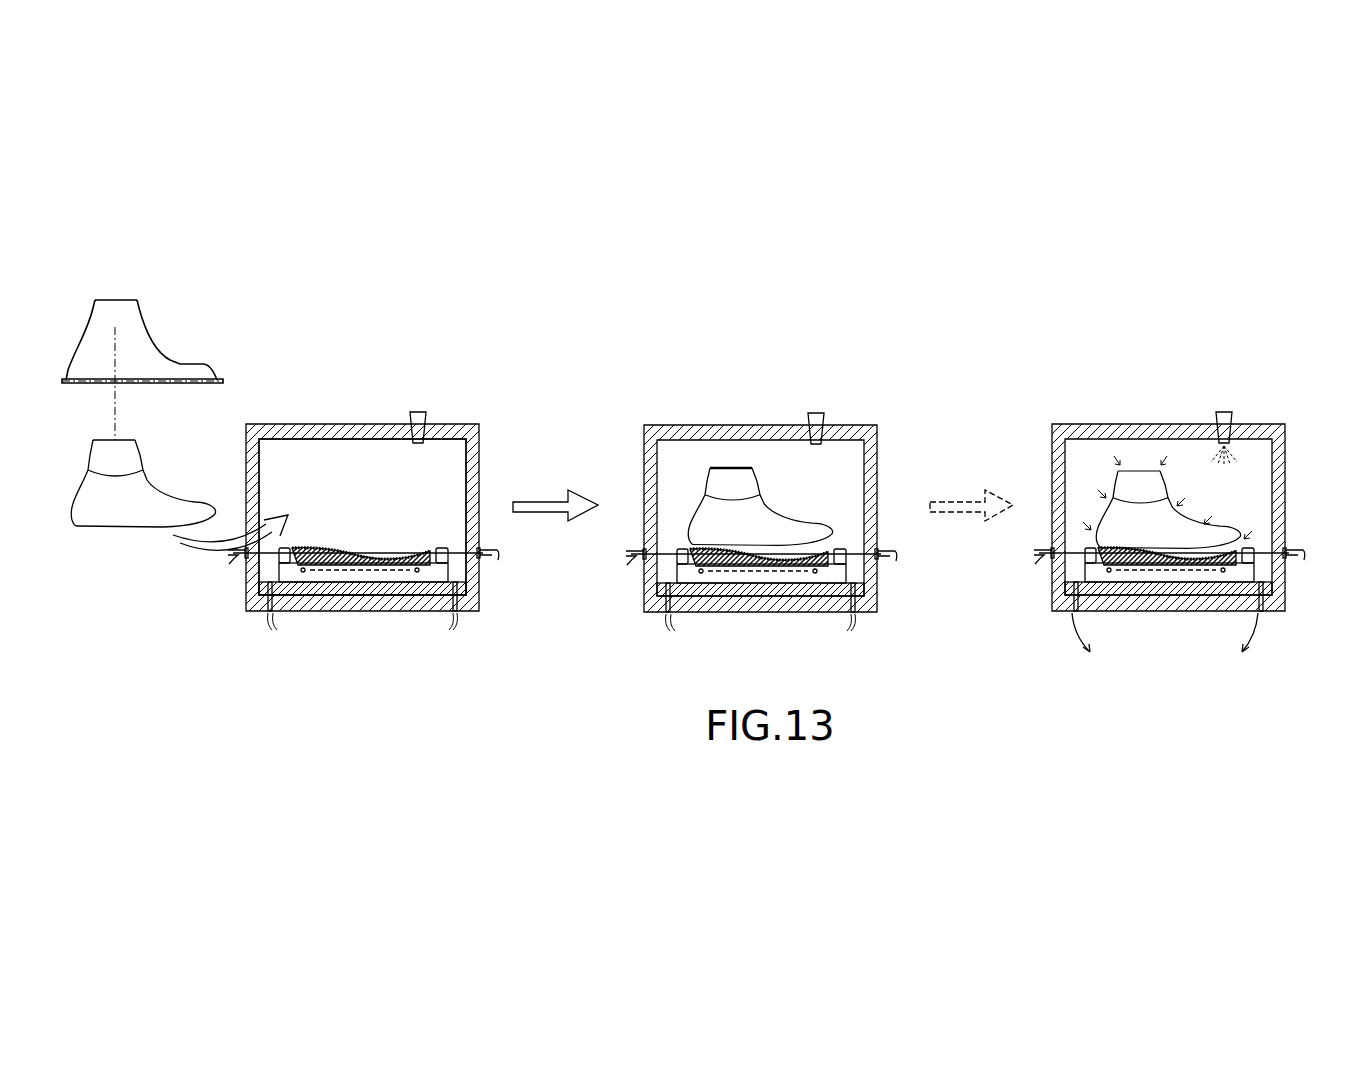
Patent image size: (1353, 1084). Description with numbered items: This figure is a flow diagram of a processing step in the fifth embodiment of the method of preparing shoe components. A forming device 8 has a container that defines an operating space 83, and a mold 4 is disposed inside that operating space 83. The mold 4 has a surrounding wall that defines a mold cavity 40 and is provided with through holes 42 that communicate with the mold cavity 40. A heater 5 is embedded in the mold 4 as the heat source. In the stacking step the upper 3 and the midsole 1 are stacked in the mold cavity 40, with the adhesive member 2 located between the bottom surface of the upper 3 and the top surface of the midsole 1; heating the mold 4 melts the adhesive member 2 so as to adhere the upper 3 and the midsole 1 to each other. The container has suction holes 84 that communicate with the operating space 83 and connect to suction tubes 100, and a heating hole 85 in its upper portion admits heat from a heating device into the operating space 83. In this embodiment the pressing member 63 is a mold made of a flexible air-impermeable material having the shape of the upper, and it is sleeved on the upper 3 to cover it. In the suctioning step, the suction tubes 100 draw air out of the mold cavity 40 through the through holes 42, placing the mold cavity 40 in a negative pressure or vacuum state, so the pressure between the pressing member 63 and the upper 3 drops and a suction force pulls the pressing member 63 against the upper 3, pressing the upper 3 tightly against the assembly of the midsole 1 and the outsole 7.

The midsole 1 is at (402, 567).
The adhesive member 2 is at (420, 546).
The upper 3 is at (165, 497).
The mold 4 is at (287, 580).
The heater 5 is at (330, 570).
The outsole 7 is at (350, 568).
The forming device 8 is at (264, 422).
The mold cavity 40 is at (292, 578).
The through hole 42 is at (281, 556).
The pressing member 63 is at (115, 300).
The operating space 83 is at (323, 458).
The suction hole 84 is at (455, 588).
The heating hole 85 is at (417, 410).
The suction tube 100 is at (236, 558).